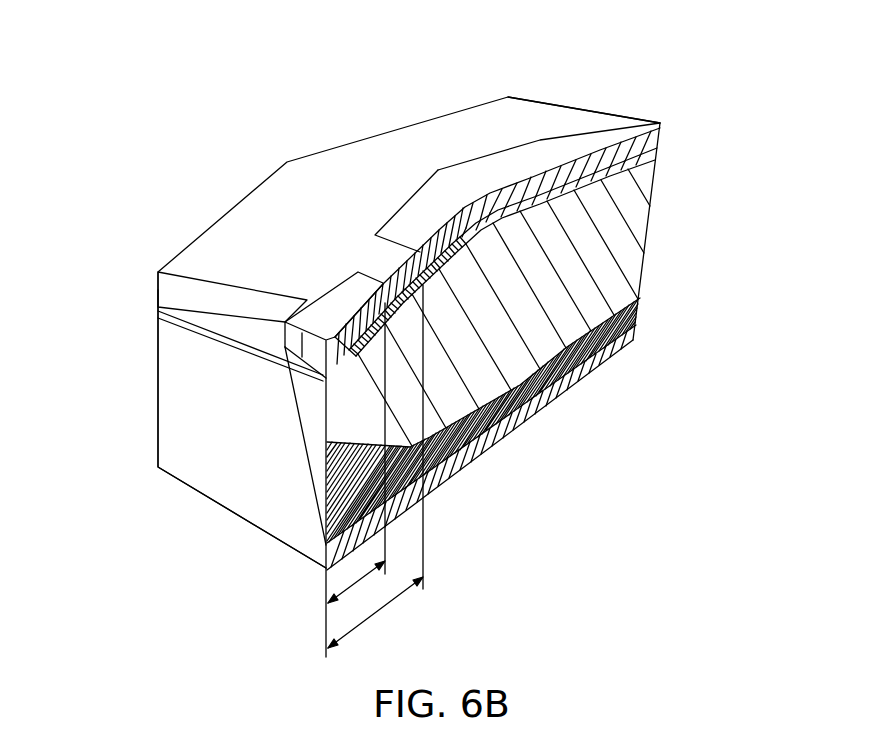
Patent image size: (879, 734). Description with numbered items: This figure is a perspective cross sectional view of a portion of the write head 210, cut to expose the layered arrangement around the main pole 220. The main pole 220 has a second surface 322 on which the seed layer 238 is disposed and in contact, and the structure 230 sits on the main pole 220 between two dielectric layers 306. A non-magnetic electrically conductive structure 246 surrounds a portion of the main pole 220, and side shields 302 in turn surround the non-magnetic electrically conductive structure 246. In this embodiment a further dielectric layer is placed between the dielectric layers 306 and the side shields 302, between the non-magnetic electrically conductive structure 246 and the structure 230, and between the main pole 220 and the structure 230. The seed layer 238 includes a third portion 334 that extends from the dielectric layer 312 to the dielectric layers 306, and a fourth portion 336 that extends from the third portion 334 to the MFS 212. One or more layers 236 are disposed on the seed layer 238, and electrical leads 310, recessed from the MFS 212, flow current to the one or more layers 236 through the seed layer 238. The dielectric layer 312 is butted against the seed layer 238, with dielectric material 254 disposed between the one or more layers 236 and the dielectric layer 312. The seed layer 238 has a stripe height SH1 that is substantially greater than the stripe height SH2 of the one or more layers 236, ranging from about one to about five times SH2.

The write head 210 is at (137, 174).
The MFS 212 is at (173, 342).
The main pole 220 is at (552, 325).
The structure 230 is at (341, 283).
The one or more layers 236 is at (358, 285).
The seed layer 238 is at (297, 357).
The non-magnetic electrically conductive structure 246 is at (313, 450).
The dielectric material 254 is at (600, 118).
The side shields 302 is at (177, 390).
The dielectric layers 306 is at (187, 273).
The electrical leads 310 is at (505, 118).
The dielectric layer 312 is at (625, 125).
The second surface 322 is at (385, 325).
The third portion 334 is at (410, 292).
The fourth portion 336 is at (380, 366).
The stripe height of the seed layer SH1 is at (375, 466).
The stripe height of the one or more layers SH2 is at (328, 580).